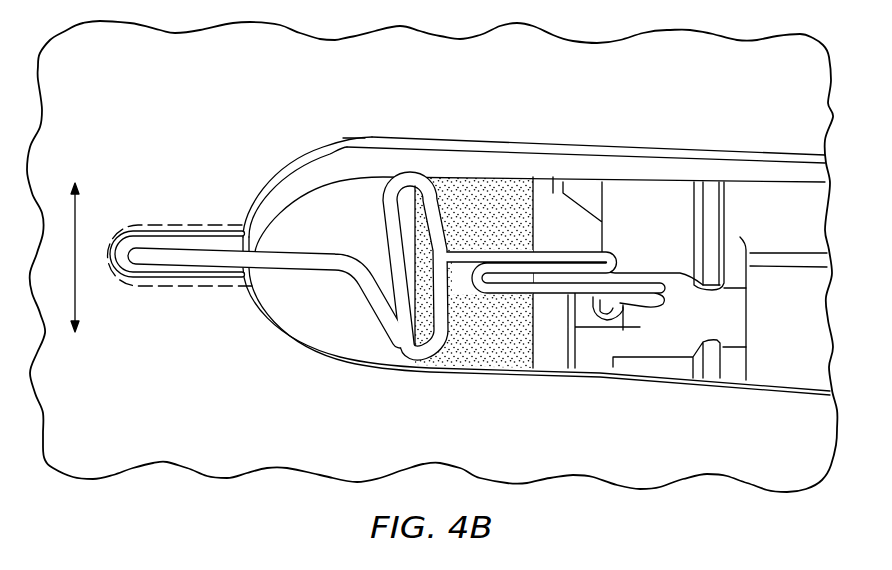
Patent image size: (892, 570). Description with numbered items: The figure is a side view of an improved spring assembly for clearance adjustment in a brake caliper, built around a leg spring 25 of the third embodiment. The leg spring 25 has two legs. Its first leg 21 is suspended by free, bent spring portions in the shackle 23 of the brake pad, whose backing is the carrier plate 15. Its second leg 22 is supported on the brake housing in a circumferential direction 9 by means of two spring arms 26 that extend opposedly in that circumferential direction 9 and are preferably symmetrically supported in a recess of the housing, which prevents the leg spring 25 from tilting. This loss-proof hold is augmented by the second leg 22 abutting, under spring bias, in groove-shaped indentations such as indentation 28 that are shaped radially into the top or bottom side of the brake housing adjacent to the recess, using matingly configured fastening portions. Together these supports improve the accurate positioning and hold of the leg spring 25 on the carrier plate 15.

The circumferential direction 9 is at (82, 304).
The carrier plate 15 is at (548, 192).
The first leg 21 is at (648, 284).
The second leg 22 is at (305, 268).
The shackle 23 is at (614, 322).
The leg spring 25 is at (545, 257).
The spring arms 26 is at (411, 173).
The groove-shaped indentation 28 is at (186, 241).